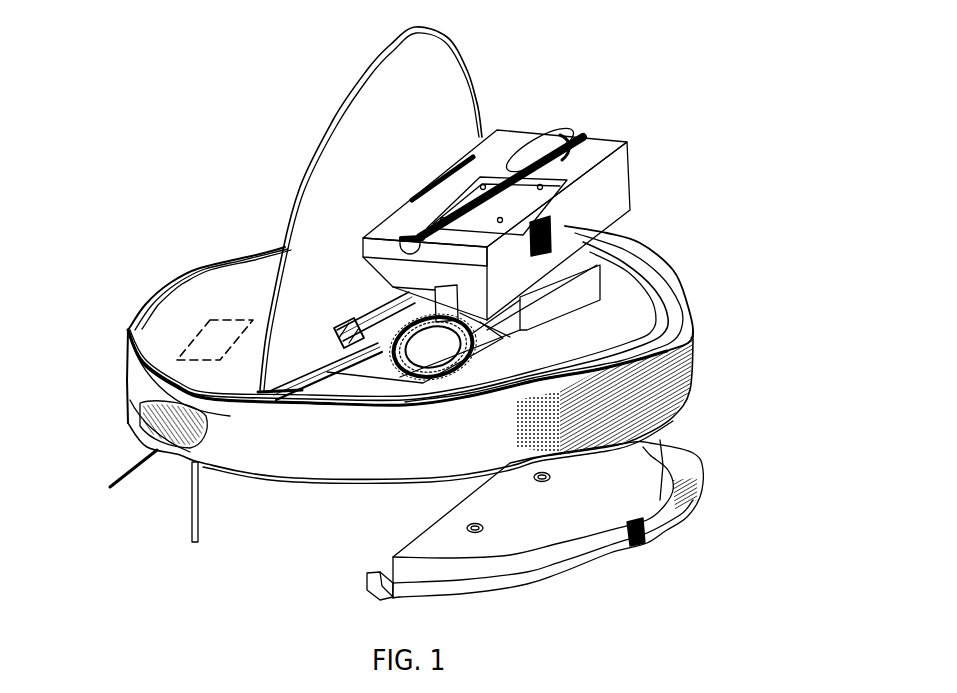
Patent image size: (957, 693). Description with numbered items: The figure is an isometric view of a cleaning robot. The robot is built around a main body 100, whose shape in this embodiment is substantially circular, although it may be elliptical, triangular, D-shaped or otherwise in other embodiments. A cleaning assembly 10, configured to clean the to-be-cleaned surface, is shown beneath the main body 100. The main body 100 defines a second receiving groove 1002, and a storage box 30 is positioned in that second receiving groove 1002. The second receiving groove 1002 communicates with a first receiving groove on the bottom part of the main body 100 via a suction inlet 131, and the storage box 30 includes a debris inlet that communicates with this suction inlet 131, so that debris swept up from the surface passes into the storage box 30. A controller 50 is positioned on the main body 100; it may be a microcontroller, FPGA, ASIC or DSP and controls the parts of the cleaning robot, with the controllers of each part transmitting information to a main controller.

The main body 100 is at (247, 257).
The controller 50 is at (213, 345).
The storage box 30 is at (585, 157).
The second receiving groove 1002 is at (527, 306).
The suction inlet 131 is at (420, 378).
The cleaning assembly 10 is at (625, 473).